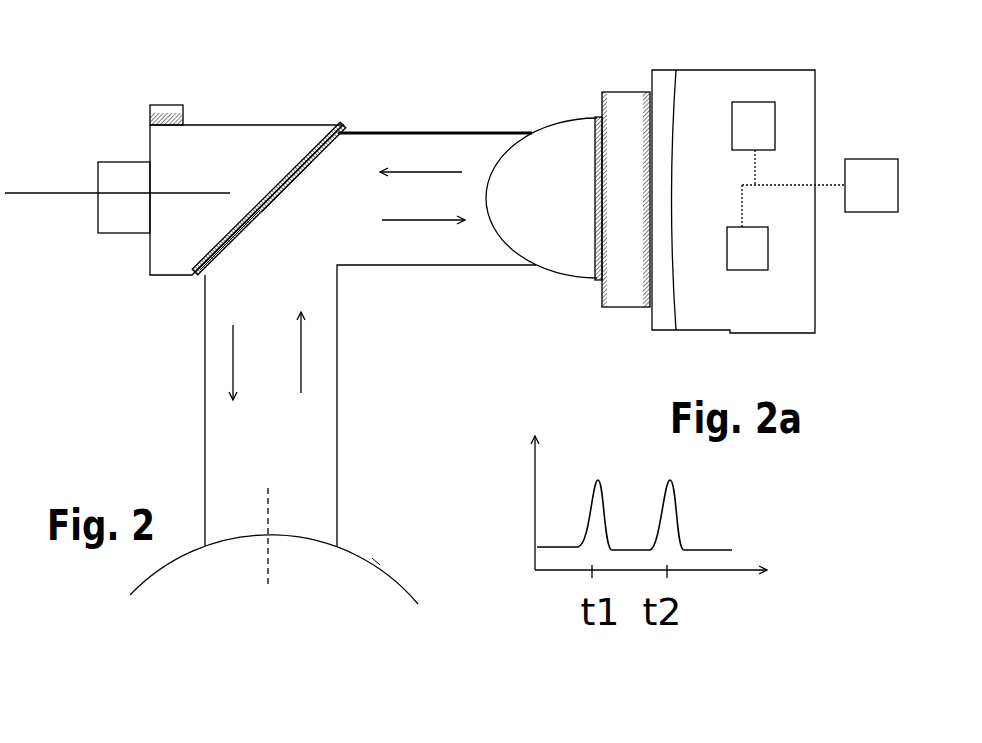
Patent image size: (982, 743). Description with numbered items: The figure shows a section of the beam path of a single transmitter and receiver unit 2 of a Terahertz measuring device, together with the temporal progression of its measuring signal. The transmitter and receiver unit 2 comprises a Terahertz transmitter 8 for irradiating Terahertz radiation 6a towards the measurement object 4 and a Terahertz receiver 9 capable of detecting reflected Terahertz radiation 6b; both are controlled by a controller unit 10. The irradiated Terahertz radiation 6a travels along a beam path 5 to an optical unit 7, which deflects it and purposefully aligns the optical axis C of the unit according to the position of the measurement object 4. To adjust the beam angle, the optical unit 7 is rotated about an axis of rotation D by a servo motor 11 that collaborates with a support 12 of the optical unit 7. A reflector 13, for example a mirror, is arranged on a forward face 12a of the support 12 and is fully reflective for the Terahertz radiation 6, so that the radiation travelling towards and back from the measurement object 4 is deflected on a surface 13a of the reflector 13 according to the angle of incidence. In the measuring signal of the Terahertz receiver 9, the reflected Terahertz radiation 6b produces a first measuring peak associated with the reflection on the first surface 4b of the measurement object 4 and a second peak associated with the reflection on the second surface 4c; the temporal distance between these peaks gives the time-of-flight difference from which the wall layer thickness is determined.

In FIG. 2, the transmitter and receiver unit 2 is at (698, 72).
In FIG. 2, the measurement object 4 is at (172, 564).
In FIG. 2, the first surface 4b is at (378, 562).
In FIG. 2A, the first surface 4b is at (595, 468).
In FIG. 2A, the second surface 4c is at (687, 503).
In FIG. 2, the beam path 5 is at (423, 267).
In FIG. 2, the Terahertz radiation 6 is at (186, 376).
In FIG. 2, the irradiated Terahertz radiation 6a is at (418, 170).
In FIG. 2, the reflected Terahertz radiation 6b is at (430, 223).
In FIG. 2, the optical unit 7 is at (148, 138).
In FIG. 2, the Terahertz transmitter 8 is at (743, 270).
In FIG. 2, the Terahertz receiver 9 is at (760, 102).
In FIG. 2, the controller unit 10 is at (870, 168).
In FIG. 2, the servo motor 11 is at (108, 236).
In FIG. 2, the support 12 is at (213, 140).
In FIG. 2, the forward face 12a is at (262, 212).
In FIG. 2, the reflector 13 is at (343, 127).
In FIG. 2, the surface 13a is at (310, 165).
In FIG. 2, the axis of rotation D is at (70, 193).
In FIG. 2, the optical axis C is at (268, 582).